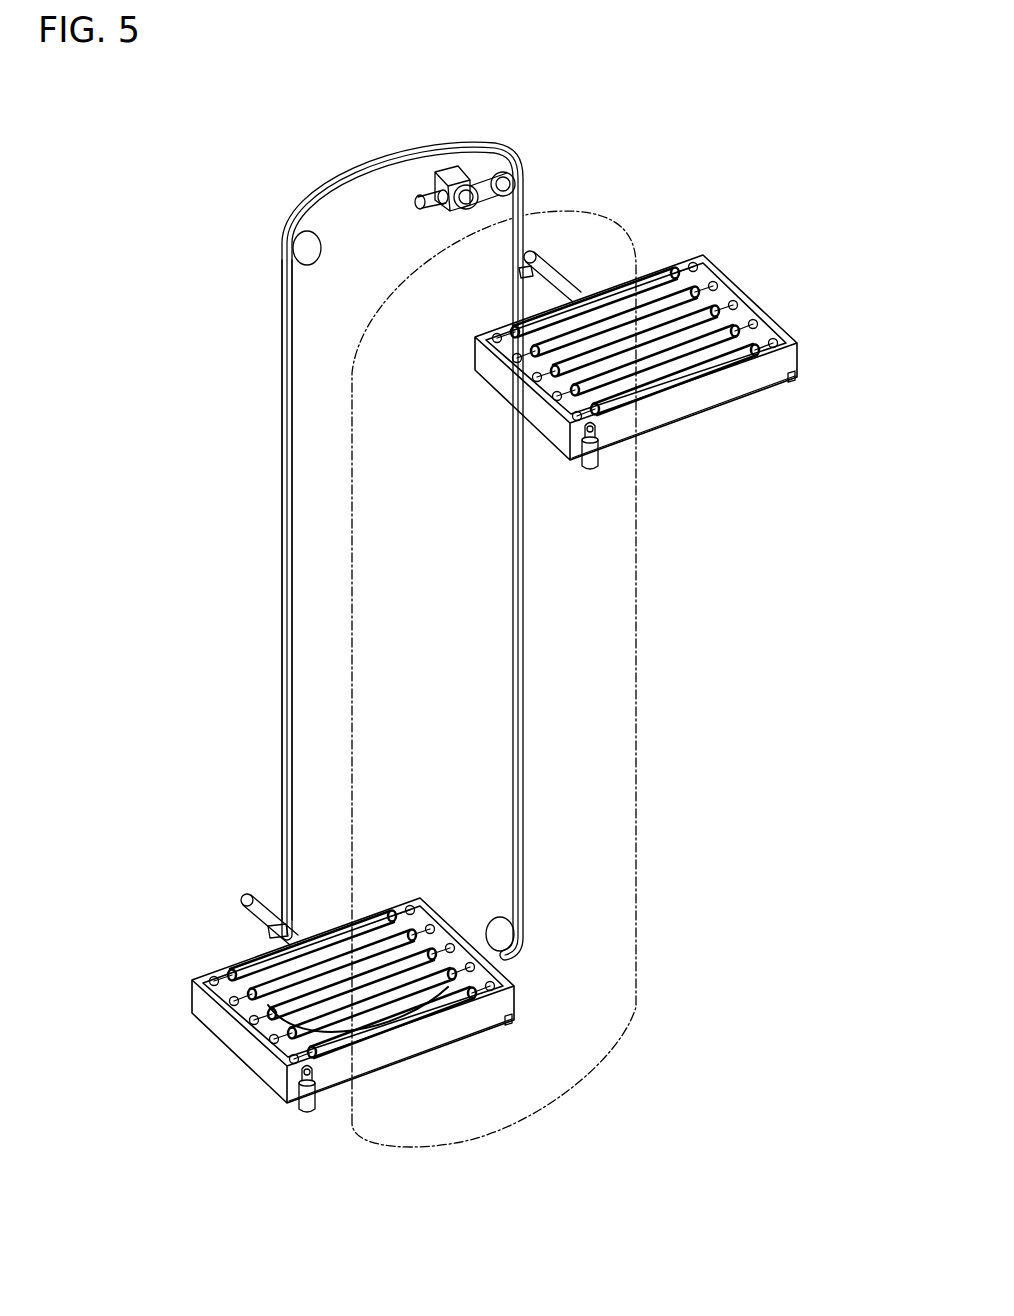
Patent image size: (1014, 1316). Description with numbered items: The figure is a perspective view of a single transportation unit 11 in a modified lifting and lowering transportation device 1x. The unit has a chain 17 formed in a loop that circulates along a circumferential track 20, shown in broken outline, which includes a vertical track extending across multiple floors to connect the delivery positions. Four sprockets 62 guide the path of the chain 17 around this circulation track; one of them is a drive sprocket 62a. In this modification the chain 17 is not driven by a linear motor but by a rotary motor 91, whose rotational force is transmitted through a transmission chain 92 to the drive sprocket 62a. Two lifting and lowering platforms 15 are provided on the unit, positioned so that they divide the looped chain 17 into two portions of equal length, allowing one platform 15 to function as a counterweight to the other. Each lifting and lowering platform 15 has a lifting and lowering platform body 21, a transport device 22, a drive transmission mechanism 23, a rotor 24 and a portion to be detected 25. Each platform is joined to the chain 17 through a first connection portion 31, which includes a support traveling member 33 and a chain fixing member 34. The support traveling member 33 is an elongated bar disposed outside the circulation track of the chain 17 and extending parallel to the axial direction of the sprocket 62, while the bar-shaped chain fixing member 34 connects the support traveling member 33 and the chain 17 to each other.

The lifting and lowering transportation device 1x is at (730, 133).
The transportation unit 11 is at (403, 527).
The lifting and lowering platform 15 is at (469, 690).
The chain 17 is at (283, 380).
The circumferential track 20 is at (636, 665).
The lifting and lowering platform body 21 is at (487, 365).
The transport device 22 is at (657, 292).
The drive transmission mechanism 23 is at (610, 429).
The rotor 24 is at (584, 470).
The portion to be detected 25 is at (798, 372).
The first connection portion 31 is at (387, 597).
The support traveling member 33 is at (548, 302).
The chain fixing member 34 is at (510, 271).
The sprocket 62 is at (302, 247).
The drive sprocket 62a is at (472, 162).
The rotary motor 91 is at (440, 197).
The transmission chain 92 is at (497, 203).